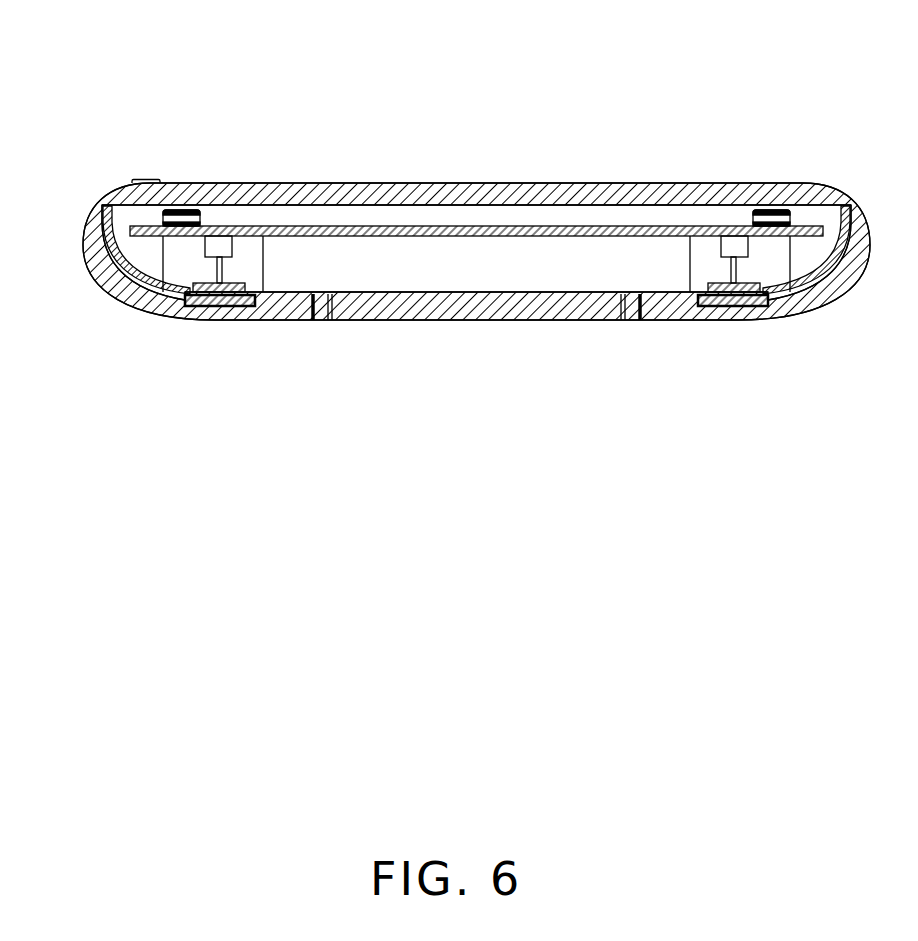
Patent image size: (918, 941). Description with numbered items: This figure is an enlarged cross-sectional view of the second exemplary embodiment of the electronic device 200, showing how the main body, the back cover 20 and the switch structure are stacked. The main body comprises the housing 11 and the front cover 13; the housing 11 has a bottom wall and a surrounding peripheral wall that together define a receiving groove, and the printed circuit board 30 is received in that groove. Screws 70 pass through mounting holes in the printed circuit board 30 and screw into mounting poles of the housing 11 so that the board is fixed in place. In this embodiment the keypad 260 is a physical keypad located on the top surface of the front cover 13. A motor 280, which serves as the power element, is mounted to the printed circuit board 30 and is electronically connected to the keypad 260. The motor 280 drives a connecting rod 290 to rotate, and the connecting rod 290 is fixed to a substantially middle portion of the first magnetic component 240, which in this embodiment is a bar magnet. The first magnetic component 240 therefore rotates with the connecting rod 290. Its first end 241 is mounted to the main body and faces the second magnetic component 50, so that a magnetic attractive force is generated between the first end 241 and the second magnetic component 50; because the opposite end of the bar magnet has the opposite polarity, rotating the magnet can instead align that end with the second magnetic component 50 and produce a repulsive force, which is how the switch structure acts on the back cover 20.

The electronic device 200 is at (391, 47).
The housing 11 is at (338, 297).
The front cover 13 is at (417, 200).
The back cover 20 is at (397, 312).
The printed circuit board 30 is at (531, 232).
The second magnetic component 50 is at (229, 306).
The screw 70 is at (187, 218).
The first magnetic component 240 is at (139, 307).
The first end 241 is at (205, 310).
The keypad 260 is at (142, 181).
The motor 280 is at (212, 249).
The connecting rod 290 is at (222, 268).